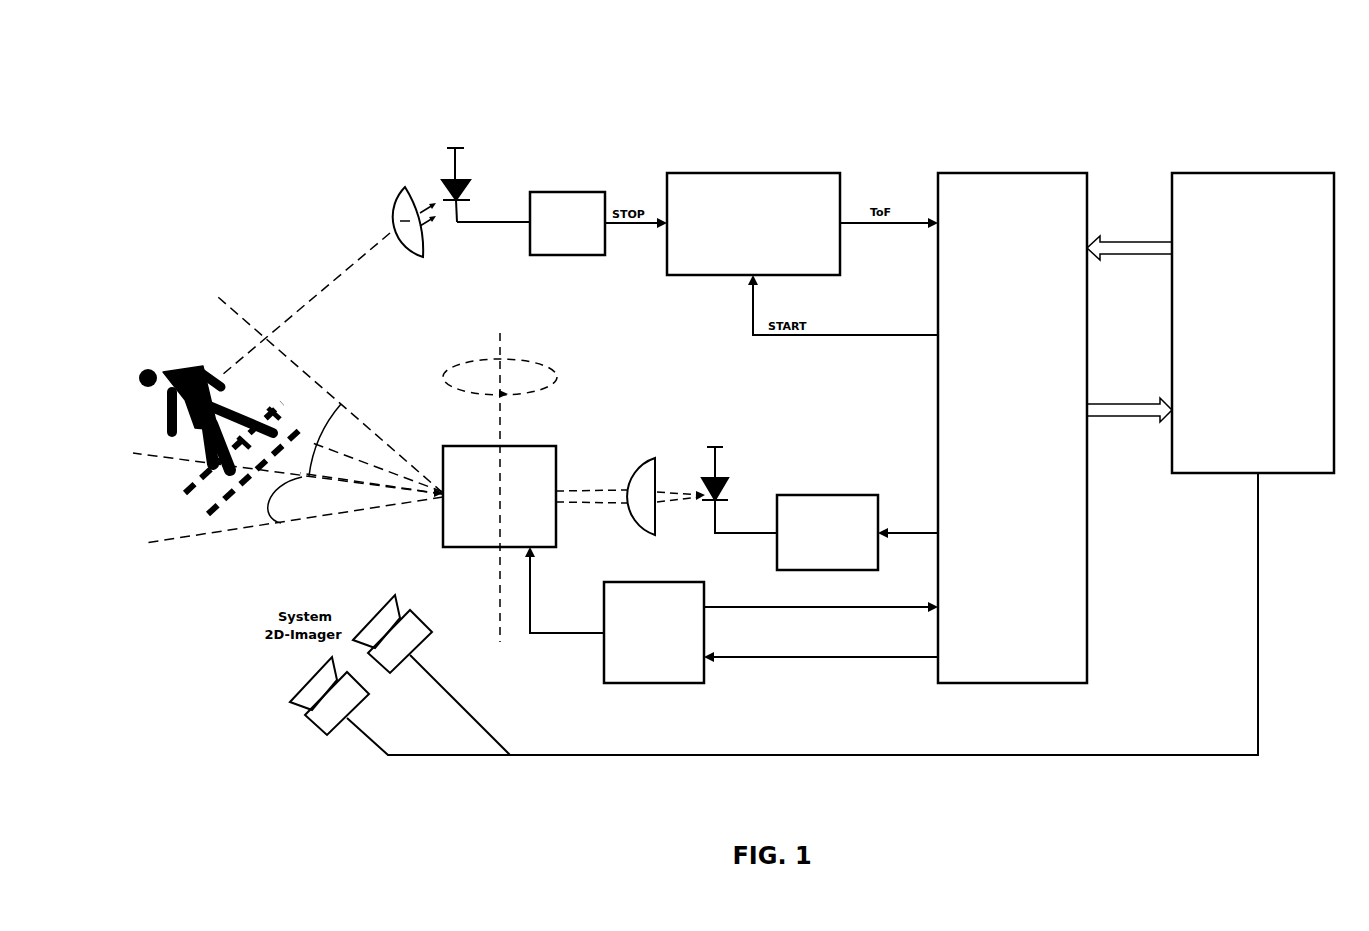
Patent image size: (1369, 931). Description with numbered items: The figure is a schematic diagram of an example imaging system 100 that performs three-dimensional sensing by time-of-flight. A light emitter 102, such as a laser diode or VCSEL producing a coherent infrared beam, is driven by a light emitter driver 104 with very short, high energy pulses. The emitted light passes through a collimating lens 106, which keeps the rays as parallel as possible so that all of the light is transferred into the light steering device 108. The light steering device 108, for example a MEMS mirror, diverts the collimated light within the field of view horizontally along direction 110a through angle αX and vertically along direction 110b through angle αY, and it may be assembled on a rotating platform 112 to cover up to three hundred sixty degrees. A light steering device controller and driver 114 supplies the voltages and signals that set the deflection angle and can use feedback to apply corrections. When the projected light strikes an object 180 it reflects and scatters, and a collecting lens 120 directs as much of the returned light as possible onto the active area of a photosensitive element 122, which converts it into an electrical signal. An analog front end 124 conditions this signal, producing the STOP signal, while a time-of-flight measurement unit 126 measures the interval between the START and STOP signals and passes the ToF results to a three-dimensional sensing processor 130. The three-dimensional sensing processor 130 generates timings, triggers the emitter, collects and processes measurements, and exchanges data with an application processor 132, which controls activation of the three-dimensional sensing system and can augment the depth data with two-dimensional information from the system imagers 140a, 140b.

The imaging system 100 is at (252, 87).
The light emitter 102 is at (742, 473).
The light emitter driver 104 is at (827, 532).
The collimating lens 106 is at (641, 480).
The light steering device 108 is at (495, 496).
The horizontal steering direction 110a is at (376, 448).
The vertical steering direction 110b is at (355, 498).
The rotating platform 112 is at (500, 487).
The light steering device controller and driver 114 is at (654, 632).
The collecting lens 120 is at (376, 209).
The photosensitive element 122 is at (468, 185).
The analog front end 124 is at (567, 223).
The time-of-flight measurement unit 126 is at (753, 224).
The 3D sensing processor 130 is at (1012, 428).
The application processor 132 is at (1253, 323).
The system imager 140a is at (392, 647).
The system imager 140b is at (329, 715).
The object 180 is at (222, 417).